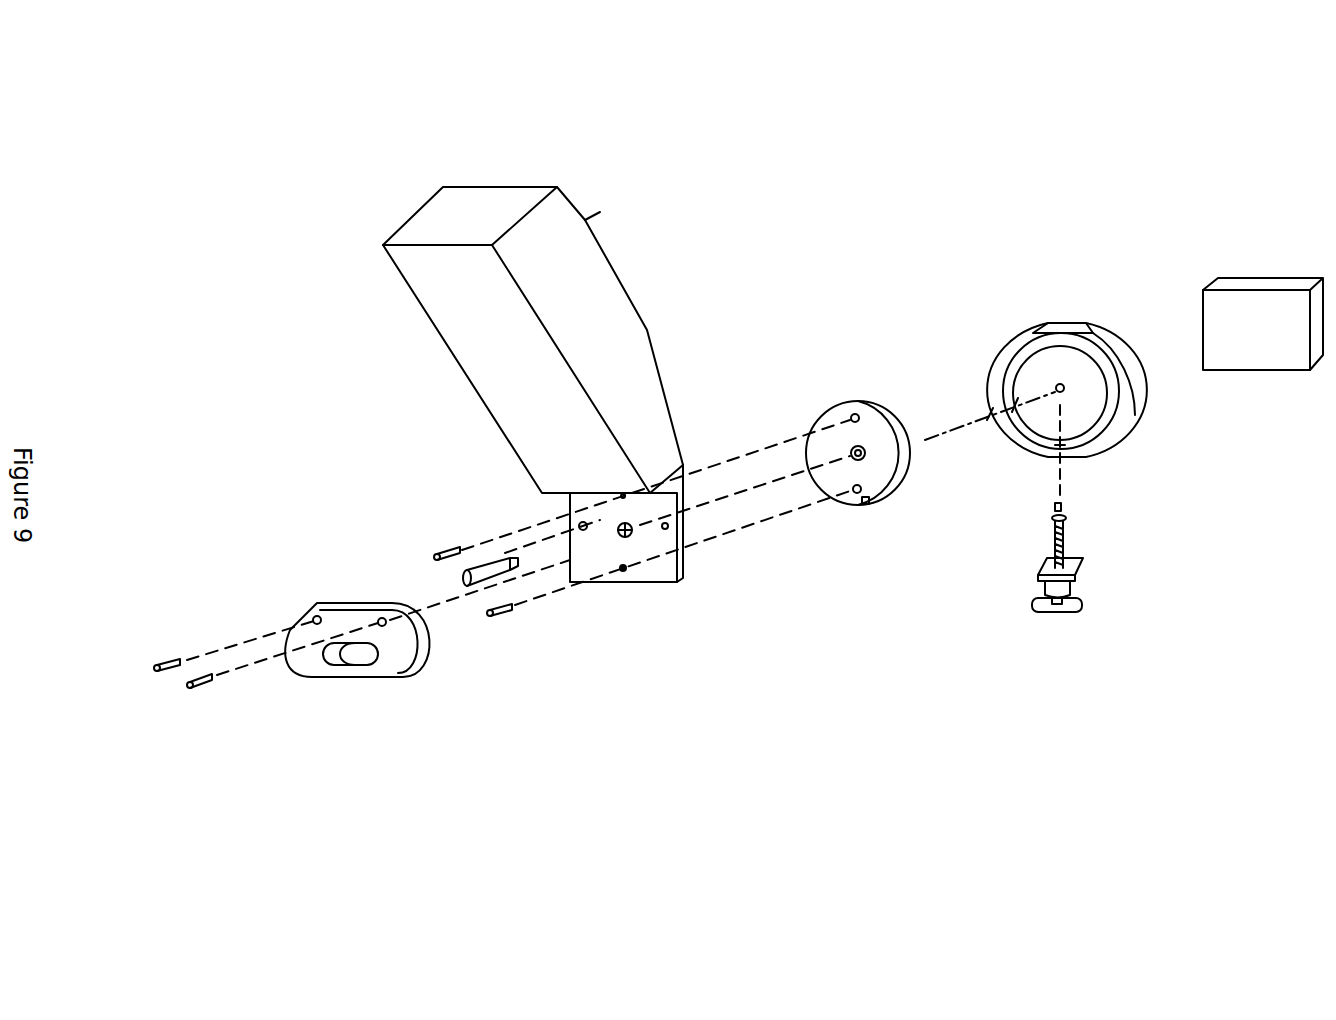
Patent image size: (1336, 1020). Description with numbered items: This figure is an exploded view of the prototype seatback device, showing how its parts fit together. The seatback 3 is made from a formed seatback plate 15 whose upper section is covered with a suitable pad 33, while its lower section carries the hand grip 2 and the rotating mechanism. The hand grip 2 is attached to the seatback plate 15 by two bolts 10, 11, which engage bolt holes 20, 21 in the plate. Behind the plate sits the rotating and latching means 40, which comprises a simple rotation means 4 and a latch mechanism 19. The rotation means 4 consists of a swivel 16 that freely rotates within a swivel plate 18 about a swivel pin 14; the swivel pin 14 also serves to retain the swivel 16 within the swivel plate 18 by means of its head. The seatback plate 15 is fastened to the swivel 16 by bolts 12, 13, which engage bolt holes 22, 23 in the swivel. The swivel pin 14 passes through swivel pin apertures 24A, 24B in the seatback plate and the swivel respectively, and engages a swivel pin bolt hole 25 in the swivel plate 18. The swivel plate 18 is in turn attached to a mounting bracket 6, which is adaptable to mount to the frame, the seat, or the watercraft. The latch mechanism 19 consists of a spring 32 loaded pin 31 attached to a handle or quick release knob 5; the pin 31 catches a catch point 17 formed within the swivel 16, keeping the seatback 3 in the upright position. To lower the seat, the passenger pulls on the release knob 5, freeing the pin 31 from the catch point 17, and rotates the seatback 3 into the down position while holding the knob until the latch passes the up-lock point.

The hand grip 2 is at (390, 662).
The seatback 3 is at (509, 331).
The rotation means 4 is at (931, 390).
The release knob 5 is at (1043, 612).
The mounting bracket 6 is at (1268, 338).
The bolt 10 is at (157, 655).
The bolt 11 is at (207, 692).
The bolt 12 is at (443, 545).
The bolt 13 is at (505, 620).
The swivel pin 14 is at (460, 577).
The seatback plate 15 is at (653, 563).
The swivel 16 is at (900, 408).
The catch point 17 is at (863, 512).
The swivel plate 18 is at (1113, 437).
The latch mechanism 19 is at (1048, 574).
The bolt hole 20 is at (580, 525).
The bolt hole 21 is at (687, 533).
The bolt hole 22 is at (856, 416).
The bolt hole 23 is at (861, 489).
The swivel pin aperture 24A is at (620, 537).
The swivel pin aperture 24B is at (852, 452).
The swivel pin bolt hole 25 is at (1062, 385).
The pin 31 is at (1050, 508).
The spring 32 is at (1048, 547).
The pad 33 is at (583, 218).
The rotating and latching means 40 is at (1183, 628).